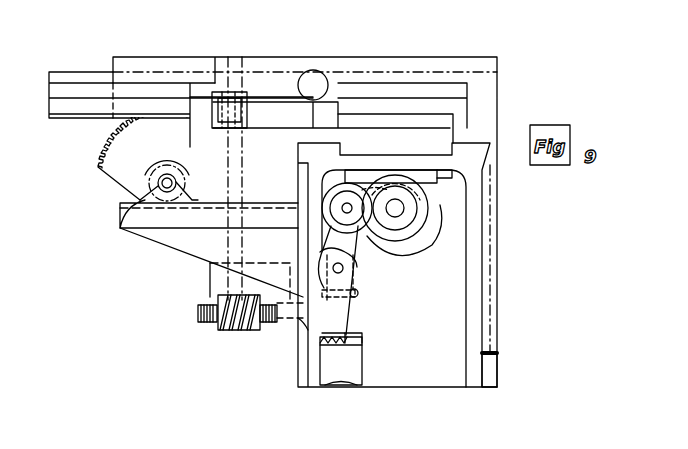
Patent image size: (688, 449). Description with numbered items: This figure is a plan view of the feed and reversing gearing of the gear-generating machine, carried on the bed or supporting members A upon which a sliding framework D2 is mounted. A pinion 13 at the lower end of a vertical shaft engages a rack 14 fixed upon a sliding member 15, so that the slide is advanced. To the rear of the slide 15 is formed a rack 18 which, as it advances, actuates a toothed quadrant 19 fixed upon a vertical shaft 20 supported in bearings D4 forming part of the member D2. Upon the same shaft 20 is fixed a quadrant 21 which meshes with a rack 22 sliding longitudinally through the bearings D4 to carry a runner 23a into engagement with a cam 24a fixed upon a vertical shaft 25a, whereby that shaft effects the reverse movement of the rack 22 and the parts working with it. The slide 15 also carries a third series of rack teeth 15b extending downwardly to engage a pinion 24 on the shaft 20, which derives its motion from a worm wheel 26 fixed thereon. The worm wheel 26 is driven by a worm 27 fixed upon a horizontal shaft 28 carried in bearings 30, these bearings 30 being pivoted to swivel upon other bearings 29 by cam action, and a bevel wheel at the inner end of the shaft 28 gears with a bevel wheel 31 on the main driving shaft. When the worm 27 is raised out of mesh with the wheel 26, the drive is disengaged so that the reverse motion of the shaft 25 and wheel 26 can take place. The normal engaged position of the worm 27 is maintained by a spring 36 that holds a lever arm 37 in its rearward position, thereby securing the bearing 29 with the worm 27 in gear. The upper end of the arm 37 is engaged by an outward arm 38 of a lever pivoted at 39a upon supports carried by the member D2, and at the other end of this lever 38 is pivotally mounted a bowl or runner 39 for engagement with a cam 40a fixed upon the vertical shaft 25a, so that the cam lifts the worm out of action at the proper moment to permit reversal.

The sliding member 15 is at (72, 78).
The third series of rack teeth 15b is at (161, 92).
The rack 18 is at (70, 118).
The toothed quadrant 19 is at (110, 142).
The quadrant 21 is at (173, 165).
The bearings D4 is at (168, 178).
The vertical shaft 20 is at (160, 185).
The rack 22 is at (120, 228).
The pinion 24 is at (248, 82).
The rack 14 is at (272, 95).
The pinion 13 is at (318, 72).
The framework D2 is at (180, 240).
The cam 24a is at (397, 168).
The cam 40a is at (372, 210).
The runner 23a is at (373, 193).
The bowl or runner 39 is at (333, 210).
The lever pivot 39a is at (347, 268).
The vertical shaft 25a is at (400, 210).
The worm wheel 26 is at (198, 317).
The worm 27 is at (220, 328).
The horizontal shaft 28 is at (283, 320).
The shaft 25 is at (233, 282).
The bearings 30 is at (305, 323).
The bearings 29 is at (300, 332).
The bevel wheel 31 is at (358, 300).
The outward arm 38 is at (340, 325).
The lever arm 37 is at (345, 343).
The spring 36 is at (343, 345).
The bed or supporting members A is at (490, 368).